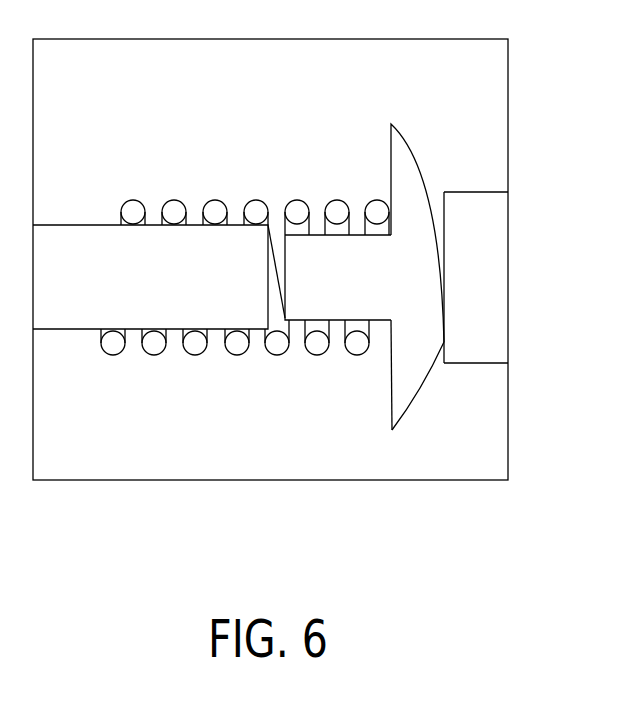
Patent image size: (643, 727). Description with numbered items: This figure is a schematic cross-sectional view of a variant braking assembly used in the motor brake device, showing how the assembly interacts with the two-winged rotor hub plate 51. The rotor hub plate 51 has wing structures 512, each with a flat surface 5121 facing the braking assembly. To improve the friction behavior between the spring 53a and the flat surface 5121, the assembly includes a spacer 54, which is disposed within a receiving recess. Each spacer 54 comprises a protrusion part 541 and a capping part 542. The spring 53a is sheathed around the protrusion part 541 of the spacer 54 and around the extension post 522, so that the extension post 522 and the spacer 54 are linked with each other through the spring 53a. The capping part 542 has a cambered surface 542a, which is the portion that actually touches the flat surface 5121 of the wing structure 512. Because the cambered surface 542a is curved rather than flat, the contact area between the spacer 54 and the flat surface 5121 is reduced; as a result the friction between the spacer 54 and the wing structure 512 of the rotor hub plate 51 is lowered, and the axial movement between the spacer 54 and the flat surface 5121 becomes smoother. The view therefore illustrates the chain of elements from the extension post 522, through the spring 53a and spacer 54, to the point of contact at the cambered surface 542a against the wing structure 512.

The two-winged rotor hub plate 51 is at (470, 183).
The wing structure 512 is at (465, 207).
The flat surface 5121 is at (442, 338).
The extension post 522 is at (77, 312).
The spring 53a is at (235, 343).
The spacer 54 is at (385, 375).
The protrusion part 541 is at (345, 305).
The capping part 542 is at (416, 341).
The cambered surface 542a is at (415, 392).